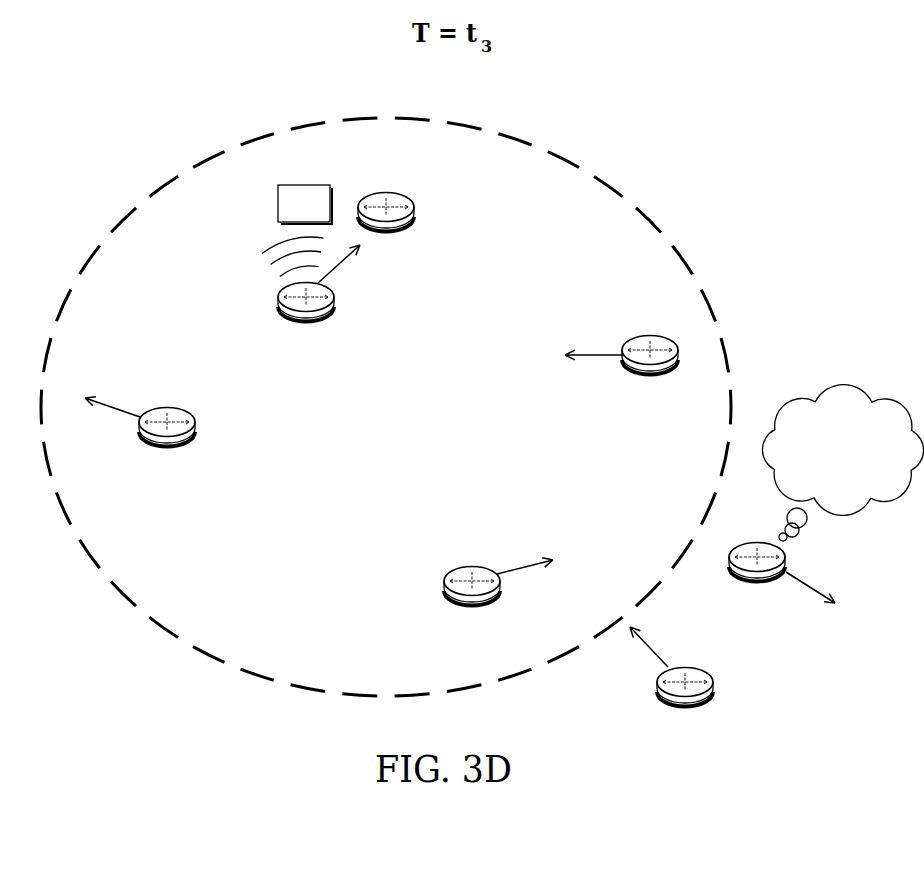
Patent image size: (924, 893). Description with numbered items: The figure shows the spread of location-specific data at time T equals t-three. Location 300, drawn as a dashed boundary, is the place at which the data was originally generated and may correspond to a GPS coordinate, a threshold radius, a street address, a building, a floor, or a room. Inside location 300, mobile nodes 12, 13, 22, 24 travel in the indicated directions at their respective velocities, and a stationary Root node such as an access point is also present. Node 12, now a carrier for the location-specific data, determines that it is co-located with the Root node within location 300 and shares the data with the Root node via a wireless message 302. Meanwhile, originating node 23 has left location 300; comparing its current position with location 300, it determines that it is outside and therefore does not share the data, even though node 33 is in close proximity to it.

The node/device 12 is at (338, 261).
The node/device 13 is at (621, 364).
The node/device 22 is at (498, 585).
The originating node 23 is at (826, 498).
The node/device 24 is at (140, 437).
The node 33 is at (671, 677).
The location 300 is at (612, 178).
The wireless message 302 is at (319, 214).